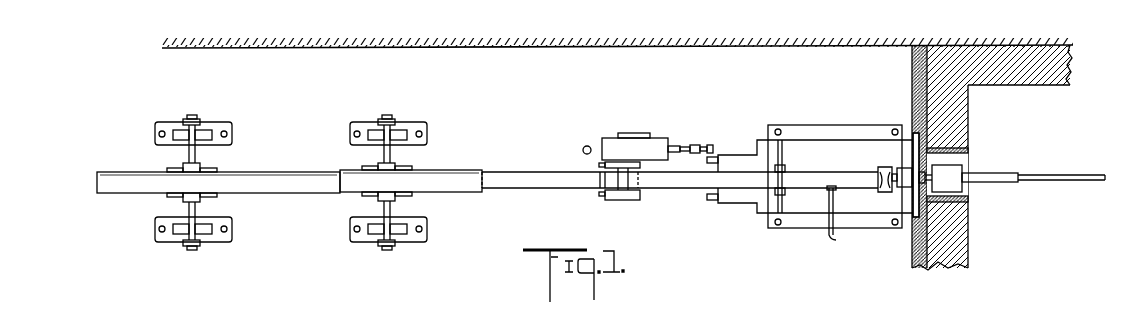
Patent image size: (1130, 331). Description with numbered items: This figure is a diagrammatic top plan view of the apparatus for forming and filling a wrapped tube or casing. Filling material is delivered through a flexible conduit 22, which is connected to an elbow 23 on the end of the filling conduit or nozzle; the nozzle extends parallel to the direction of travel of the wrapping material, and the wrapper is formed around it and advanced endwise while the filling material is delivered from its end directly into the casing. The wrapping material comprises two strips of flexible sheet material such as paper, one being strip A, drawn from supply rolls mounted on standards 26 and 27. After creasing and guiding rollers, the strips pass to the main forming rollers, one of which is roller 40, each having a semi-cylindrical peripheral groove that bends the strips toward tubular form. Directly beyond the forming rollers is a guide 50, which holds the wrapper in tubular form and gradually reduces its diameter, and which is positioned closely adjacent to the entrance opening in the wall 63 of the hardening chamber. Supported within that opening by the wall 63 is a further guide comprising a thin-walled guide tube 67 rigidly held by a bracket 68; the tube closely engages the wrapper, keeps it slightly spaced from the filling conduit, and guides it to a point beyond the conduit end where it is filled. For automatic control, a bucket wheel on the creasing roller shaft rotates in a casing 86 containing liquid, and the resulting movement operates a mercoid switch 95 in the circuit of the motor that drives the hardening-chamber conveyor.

The strip of flexible sheet material A is at (533, 181).
The flexible conduit 22 is at (833, 238).
The elbow 23 is at (838, 190).
The standard 26 is at (173, 240).
The standard 27 is at (405, 237).
The main forming roller 40 is at (887, 188).
The guide 50 is at (908, 167).
The wall of the hardening chamber 63 is at (968, 255).
The guide tube 67 is at (1002, 182).
The bracket 68 is at (948, 173).
The casing 86 is at (637, 147).
The mercoid switch 95 is at (697, 145).